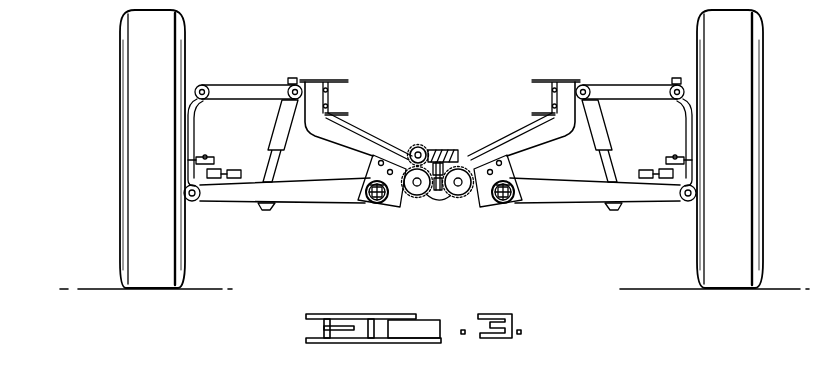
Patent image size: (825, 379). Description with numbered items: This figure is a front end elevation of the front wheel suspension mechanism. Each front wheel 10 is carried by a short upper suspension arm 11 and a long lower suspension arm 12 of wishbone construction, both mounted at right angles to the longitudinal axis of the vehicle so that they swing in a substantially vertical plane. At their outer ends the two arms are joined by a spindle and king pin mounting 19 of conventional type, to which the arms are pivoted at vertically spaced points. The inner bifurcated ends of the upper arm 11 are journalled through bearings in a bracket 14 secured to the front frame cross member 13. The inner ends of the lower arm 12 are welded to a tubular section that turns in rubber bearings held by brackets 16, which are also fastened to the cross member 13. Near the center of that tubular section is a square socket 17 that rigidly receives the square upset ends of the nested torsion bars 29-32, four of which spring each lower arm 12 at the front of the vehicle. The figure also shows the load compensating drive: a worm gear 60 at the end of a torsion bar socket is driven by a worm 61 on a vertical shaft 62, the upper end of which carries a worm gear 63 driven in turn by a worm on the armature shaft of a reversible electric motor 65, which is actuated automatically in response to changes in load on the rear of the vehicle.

The front wheel 10 is at (130, 127).
The upper suspension arm 11 is at (237, 86).
The lower suspension arm 12 is at (310, 194).
The front frame cross member 13 is at (336, 150).
The bracket 14 is at (303, 83).
The bracket 16 is at (402, 190).
The square socket 17 is at (378, 207).
The spindle and king pin mounting 19 is at (193, 126).
The torsion bars 29-32 is at (360, 207).
The worm gear 60 is at (438, 197).
The worm 61 is at (452, 163).
The vertical shaft 62 is at (444, 148).
The worm gear 63 is at (463, 151).
The reversible electric motor 65 is at (418, 147).